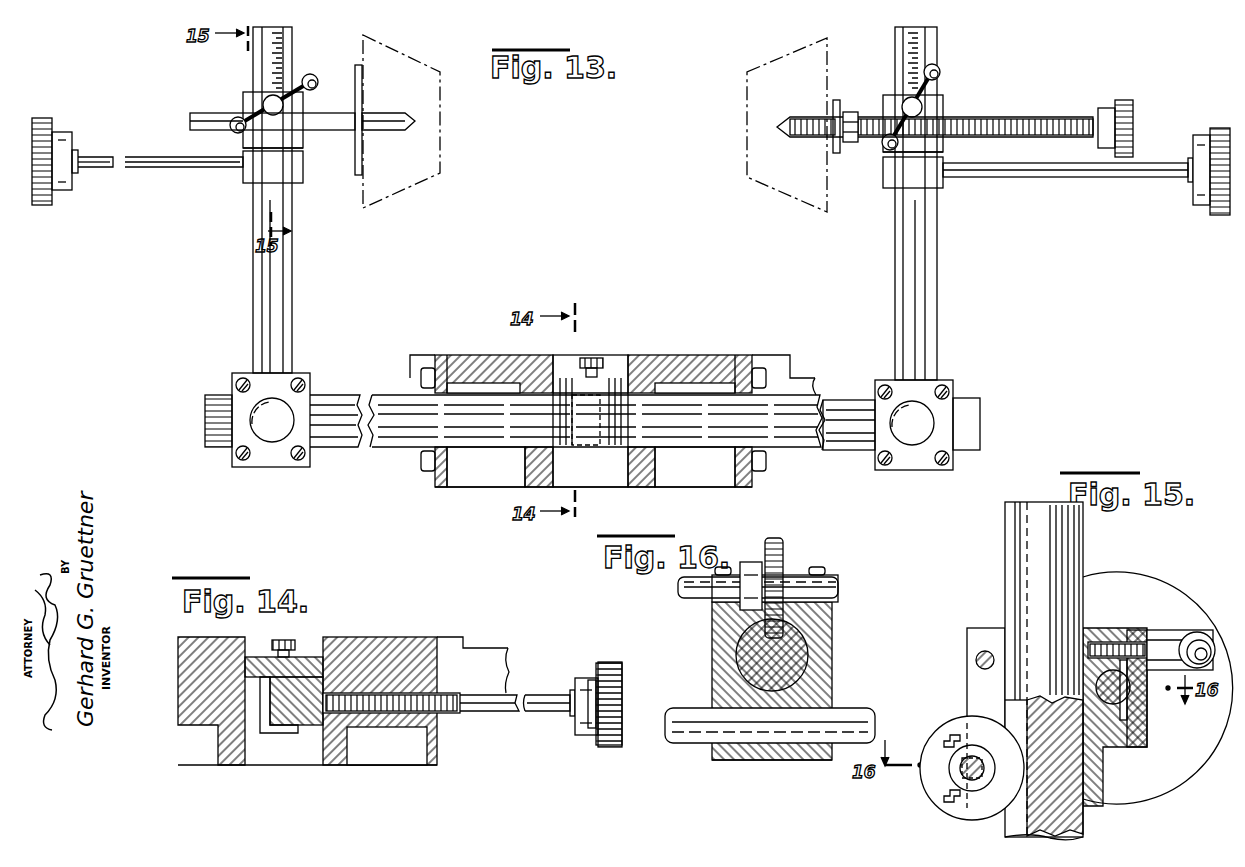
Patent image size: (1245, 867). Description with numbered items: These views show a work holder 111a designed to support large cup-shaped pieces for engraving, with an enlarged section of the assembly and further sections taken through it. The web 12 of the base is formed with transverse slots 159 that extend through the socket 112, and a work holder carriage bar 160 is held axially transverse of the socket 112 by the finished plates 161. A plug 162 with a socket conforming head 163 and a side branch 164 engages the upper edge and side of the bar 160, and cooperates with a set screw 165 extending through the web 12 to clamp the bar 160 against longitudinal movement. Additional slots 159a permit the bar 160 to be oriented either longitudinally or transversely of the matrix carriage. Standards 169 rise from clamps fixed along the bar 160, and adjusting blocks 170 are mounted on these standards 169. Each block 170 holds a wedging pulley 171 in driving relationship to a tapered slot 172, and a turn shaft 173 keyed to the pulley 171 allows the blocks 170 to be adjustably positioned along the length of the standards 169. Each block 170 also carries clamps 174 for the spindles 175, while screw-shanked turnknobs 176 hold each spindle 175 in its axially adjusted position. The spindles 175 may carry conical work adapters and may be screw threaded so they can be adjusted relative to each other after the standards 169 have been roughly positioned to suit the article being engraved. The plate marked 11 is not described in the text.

In FIG. 13, the frame plate 11 is at (785, 358).
In FIG. 14, the frame plate 11 is at (483, 646).
In FIG. 13, the web 12 is at (478, 360).
In FIG. 14, the web 12 is at (420, 655).
In FIG. 13, the work holder 111a is at (135, 346).
In FIG. 13, the socket 112 is at (617, 484).
In FIG. 14, the socket 112 is at (322, 766).
In FIG. 13, the transverse slots 159 is at (524, 450).
In FIG. 14, the transverse slots 159 is at (258, 702).
In FIG. 13, the slots 159a is at (549, 420).
In FIG. 13, the work holder carriage bar 160 is at (376, 404).
In FIG. 14, the work holder carriage bar 160 is at (290, 706).
In FIG. 13, the finished plates 161 is at (421, 464).
In FIG. 13, the plug 162 is at (606, 375).
In FIG. 14, the plug 162 is at (305, 656).
In FIG. 13, the socket conforming head 163 is at (614, 392).
In FIG. 14, the socket conforming head 163 is at (258, 668).
In FIG. 13, the side branch 164 is at (570, 448).
In FIG. 14, the side branch 164 is at (308, 692).
In FIG. 14, the set screw 165 is at (524, 712).
In FIG. 16, the standards 169 is at (745, 656).
In FIG. 15, the standards 169 is at (1067, 550).
In FIG. 16, the adjusting blocks 170 is at (830, 632).
In FIG. 15, the adjusting blocks 170 is at (1095, 781).
In FIG. 16, the wedging pulley 171 is at (775, 560).
In FIG. 15, the wedging pulley 171 is at (935, 745).
In FIG. 16, the tapered slot 172 is at (791, 657).
In FIG. 15, the tapered slot 172 is at (1015, 712).
In FIG. 16, the turn shaft 173 is at (698, 590).
In FIG. 15, the turn shaft 173 is at (948, 772).
In FIG. 16, the clamps 174 is at (770, 756).
In FIG. 15, the clamps 174 is at (1138, 722).
In FIG. 16, the spindles 175 is at (850, 722).
In FIG. 15, the spindles 175 is at (1096, 687).
In FIG. 15, the screw-shanked turnknobs 176 is at (1165, 640).